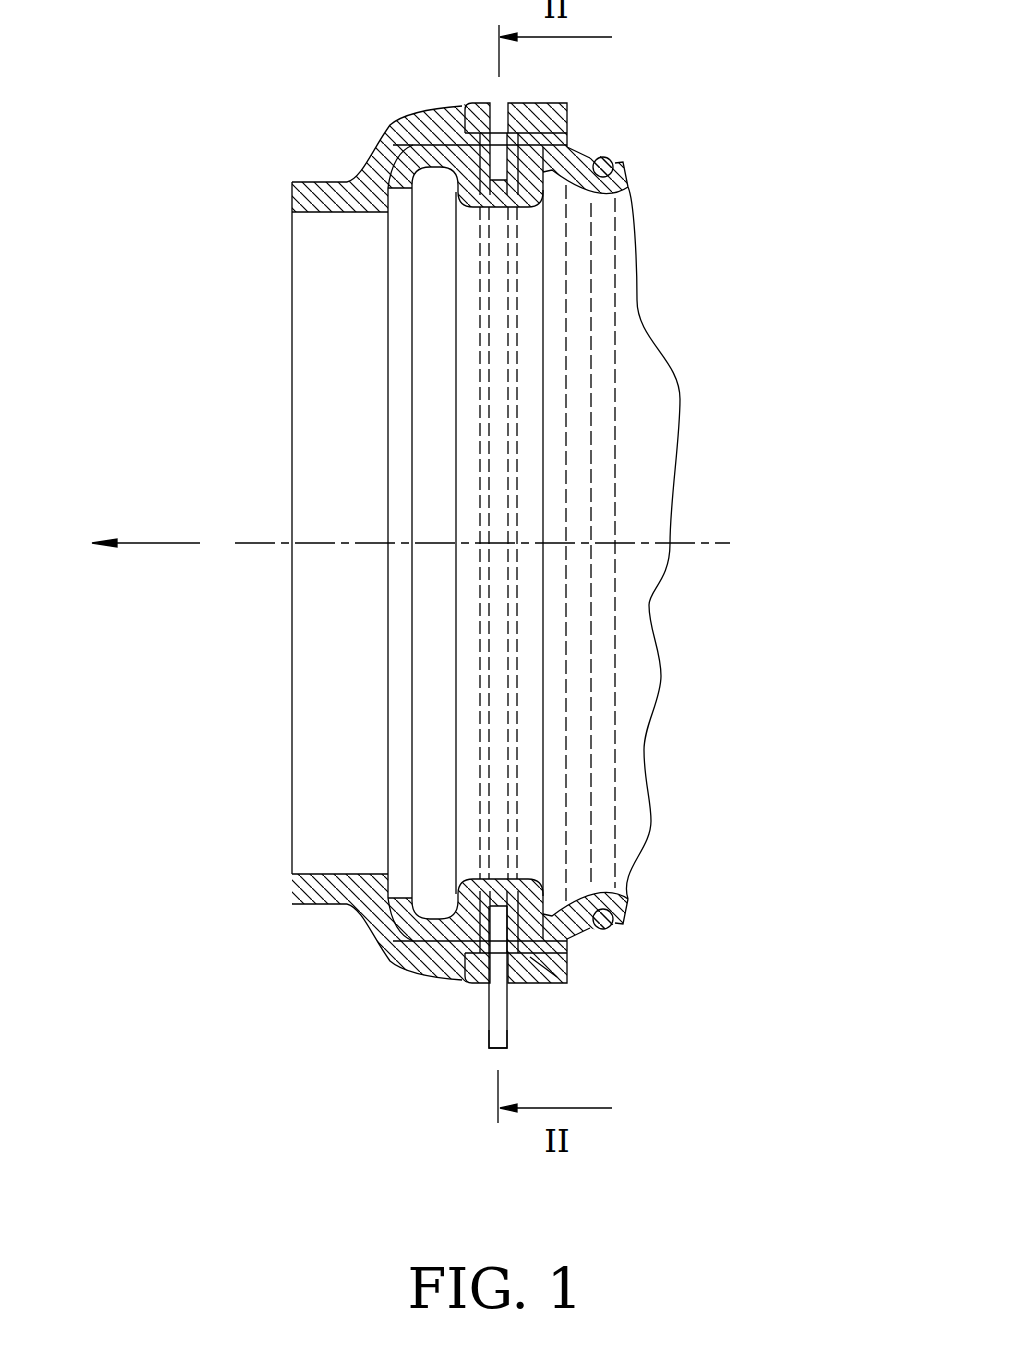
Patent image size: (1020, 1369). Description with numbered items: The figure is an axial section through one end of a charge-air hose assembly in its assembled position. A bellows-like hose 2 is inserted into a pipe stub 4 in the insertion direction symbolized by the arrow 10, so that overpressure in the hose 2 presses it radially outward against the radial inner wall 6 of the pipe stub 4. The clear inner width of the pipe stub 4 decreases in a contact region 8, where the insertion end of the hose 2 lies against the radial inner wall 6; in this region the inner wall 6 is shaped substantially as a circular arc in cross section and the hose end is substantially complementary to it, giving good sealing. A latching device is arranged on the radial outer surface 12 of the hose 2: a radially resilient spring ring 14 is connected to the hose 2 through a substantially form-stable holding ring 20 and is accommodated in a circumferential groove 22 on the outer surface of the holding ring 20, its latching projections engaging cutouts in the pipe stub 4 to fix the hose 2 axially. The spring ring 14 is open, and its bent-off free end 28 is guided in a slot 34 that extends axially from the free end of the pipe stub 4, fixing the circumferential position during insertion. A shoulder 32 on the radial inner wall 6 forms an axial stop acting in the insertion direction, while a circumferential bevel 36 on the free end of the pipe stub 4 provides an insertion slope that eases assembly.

The hose 2 is at (664, 172).
The pipe stub 4 is at (316, 178).
The radial inner wall 6 is at (458, 965).
The contact region 8 is at (397, 121).
The arrow 10 is at (152, 545).
The radial outer surface 12 is at (533, 945).
The spring ring 14 is at (535, 145).
The holding ring 20 is at (542, 180).
The circumferential groove 22 is at (543, 173).
The free end 28 is at (490, 1052).
The shoulder 32 is at (462, 102).
The slot 34 is at (553, 973).
The circumferential bevel 36 is at (567, 145).